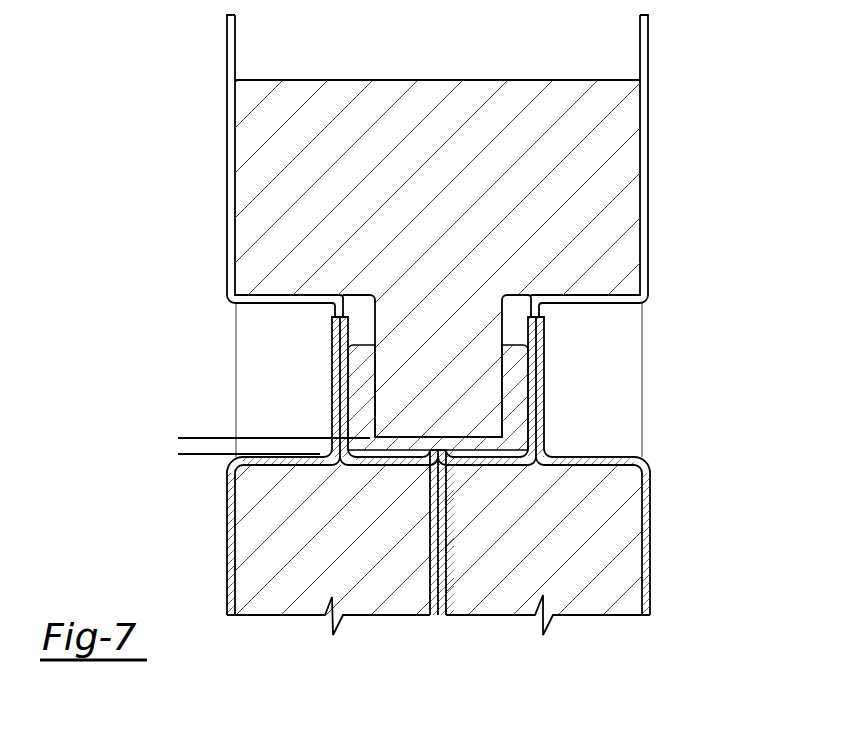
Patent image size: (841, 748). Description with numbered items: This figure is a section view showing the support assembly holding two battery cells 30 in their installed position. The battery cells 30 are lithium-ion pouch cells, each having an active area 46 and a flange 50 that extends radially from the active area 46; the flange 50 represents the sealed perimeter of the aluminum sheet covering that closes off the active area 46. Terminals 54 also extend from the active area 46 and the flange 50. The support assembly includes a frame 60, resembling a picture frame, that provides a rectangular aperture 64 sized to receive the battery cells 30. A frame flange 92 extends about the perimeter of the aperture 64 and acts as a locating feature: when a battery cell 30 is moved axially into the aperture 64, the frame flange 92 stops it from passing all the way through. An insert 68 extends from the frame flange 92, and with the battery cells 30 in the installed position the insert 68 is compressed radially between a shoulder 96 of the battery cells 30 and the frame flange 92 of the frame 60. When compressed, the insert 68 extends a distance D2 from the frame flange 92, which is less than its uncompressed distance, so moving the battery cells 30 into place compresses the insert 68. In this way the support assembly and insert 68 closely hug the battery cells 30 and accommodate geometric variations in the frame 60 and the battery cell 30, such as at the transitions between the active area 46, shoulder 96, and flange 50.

The terminal 54 is at (230, 42).
The frame 60 is at (437, 87).
The aperture 64 is at (694, 345).
The flange 50 is at (557, 317).
The frame flange 92 is at (385, 383).
The insert 68 is at (363, 415).
The shoulder 96 is at (402, 452).
The active area 46 is at (662, 457).
The battery cell 30 is at (368, 599).
The distance D2 is at (203, 405).